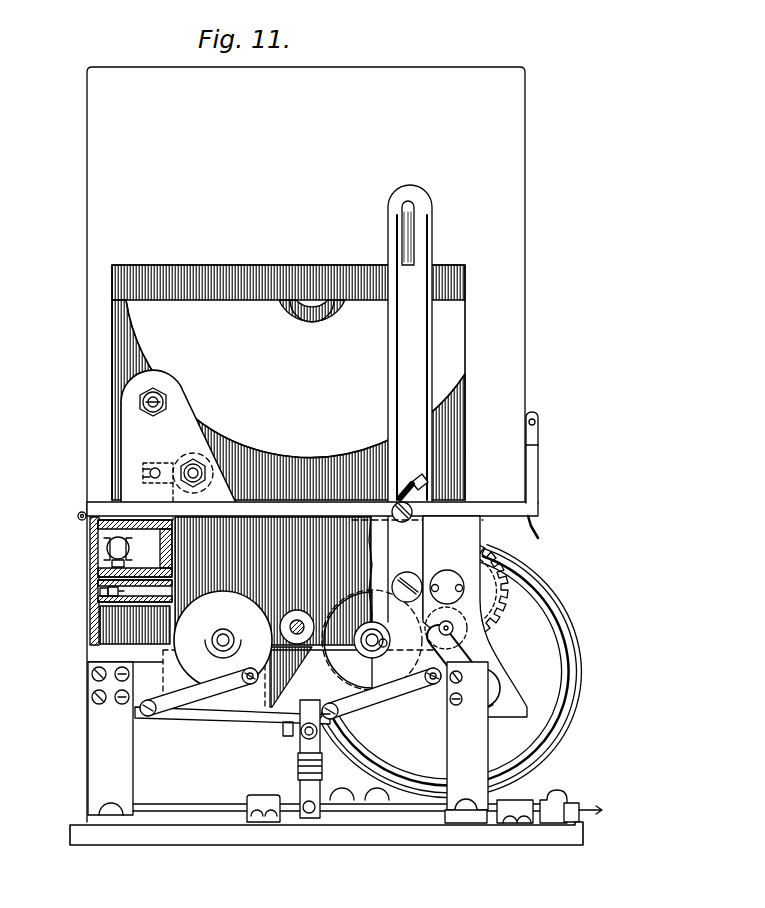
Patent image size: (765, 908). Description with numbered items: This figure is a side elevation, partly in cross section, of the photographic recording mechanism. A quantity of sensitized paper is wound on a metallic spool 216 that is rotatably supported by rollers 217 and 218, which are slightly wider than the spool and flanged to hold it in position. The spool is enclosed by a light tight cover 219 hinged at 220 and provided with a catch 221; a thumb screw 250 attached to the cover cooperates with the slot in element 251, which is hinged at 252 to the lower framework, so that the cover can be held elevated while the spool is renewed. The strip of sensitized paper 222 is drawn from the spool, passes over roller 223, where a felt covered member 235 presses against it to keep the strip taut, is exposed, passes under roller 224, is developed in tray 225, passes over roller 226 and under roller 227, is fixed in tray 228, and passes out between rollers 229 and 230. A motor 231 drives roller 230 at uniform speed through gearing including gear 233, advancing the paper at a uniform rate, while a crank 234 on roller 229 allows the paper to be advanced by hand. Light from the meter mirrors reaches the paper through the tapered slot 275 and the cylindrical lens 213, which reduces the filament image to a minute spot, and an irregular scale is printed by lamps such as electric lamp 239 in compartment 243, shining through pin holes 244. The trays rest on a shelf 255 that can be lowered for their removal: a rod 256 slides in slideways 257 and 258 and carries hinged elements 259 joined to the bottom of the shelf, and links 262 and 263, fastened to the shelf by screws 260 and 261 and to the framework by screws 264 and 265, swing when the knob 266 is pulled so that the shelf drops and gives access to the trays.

The cylindrical lens 213 is at (120, 592).
The metallic spool 216 is at (158, 314).
The roller 217 is at (124, 389).
The roller 218 is at (438, 444).
The light tight cover 219 is at (96, 131).
The hinge 220 is at (80, 522).
The catch 221 is at (543, 530).
The strip of sensitized paper 222 is at (225, 448).
The roller 223 is at (202, 490).
The roller 224 is at (215, 652).
The tray 225 is at (288, 759).
The roller 226 is at (274, 615).
The roller 227 is at (360, 653).
The tray 228 is at (326, 740).
The roller 229 is at (470, 640).
The roller 230 is at (485, 578).
The motor 231 is at (547, 668).
The gear 233 is at (488, 554).
The crank 234 is at (494, 664).
The felt covered member 235 is at (162, 468).
The electric lamp 239 is at (112, 557).
The compartment 243 is at (118, 546).
The pin holes 244 is at (312, 510).
The thumb screw 250 is at (425, 505).
The slotted element 251 is at (440, 472).
The hinge 252 is at (413, 575).
The shelf 255 is at (283, 718).
The rod 256 is at (232, 804).
The slideway 257 is at (270, 786).
The slideway 258 is at (522, 825).
The hinged elements 259 is at (300, 768).
The screw 260 is at (145, 720).
The screw 261 is at (376, 720).
The link 262 is at (204, 688).
The link 263 is at (414, 680).
The screw 264 is at (254, 682).
The screw 265 is at (430, 690).
The knob 266 is at (570, 792).
The slot 275 is at (100, 592).